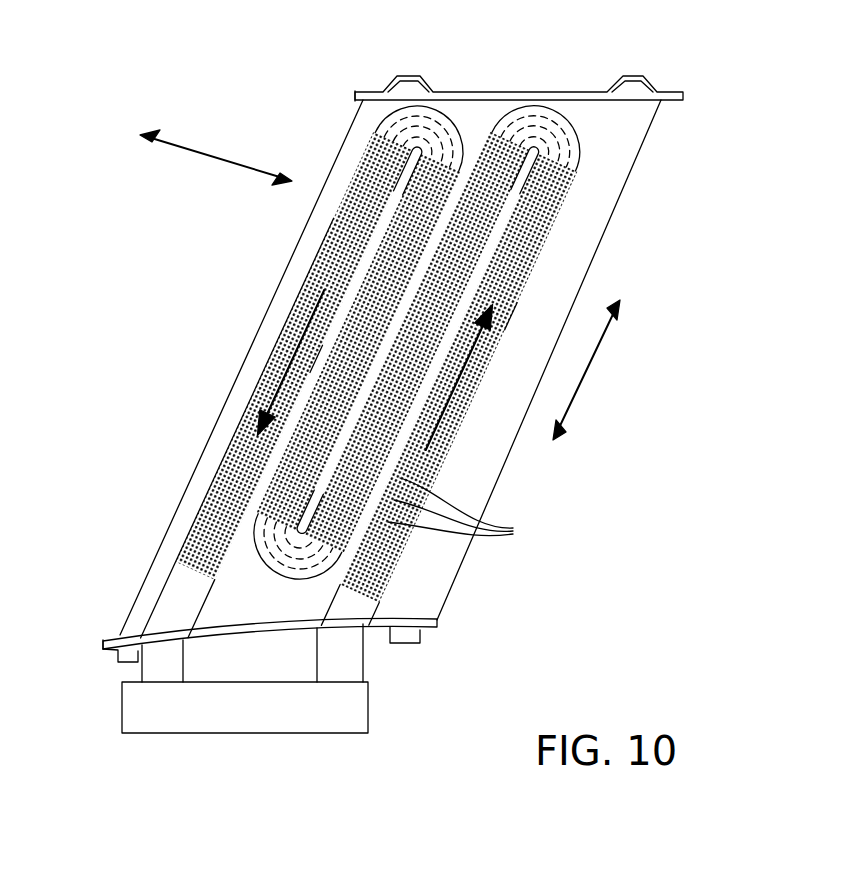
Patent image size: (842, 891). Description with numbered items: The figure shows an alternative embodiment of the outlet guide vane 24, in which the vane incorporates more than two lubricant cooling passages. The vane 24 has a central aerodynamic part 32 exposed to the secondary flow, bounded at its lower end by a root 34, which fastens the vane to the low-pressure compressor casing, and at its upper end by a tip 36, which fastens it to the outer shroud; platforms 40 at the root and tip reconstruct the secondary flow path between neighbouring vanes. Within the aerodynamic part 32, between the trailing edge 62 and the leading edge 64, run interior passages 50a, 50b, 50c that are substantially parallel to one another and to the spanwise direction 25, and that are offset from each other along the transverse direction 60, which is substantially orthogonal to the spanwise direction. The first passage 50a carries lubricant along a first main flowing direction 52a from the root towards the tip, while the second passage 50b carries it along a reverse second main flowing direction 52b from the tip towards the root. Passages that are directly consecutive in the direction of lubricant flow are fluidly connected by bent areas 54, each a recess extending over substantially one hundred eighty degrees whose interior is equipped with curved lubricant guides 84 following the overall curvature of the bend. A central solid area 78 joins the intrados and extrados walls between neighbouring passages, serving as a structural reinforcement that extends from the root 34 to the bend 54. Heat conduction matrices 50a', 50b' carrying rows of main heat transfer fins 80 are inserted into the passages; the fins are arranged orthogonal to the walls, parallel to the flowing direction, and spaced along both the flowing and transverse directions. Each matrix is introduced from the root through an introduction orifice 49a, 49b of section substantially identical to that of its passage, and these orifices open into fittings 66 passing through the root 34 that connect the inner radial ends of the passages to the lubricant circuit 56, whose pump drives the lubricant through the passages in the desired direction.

The outlet guide vane 24 is at (752, 226).
The spanwise direction 25 is at (590, 368).
The aerodynamic part 32 is at (258, 291).
The root 34 is at (415, 636).
The tip 36 is at (632, 88).
The platforms 40 is at (356, 102).
The introduction orifice 49a is at (340, 627).
The introduction orifice 49b is at (178, 640).
The first lubricant cooling interior passage 50a is at (445, 394).
The heat conduction matrix 50a' is at (596, 297).
The second lubricant cooling interior passage 50b is at (257, 393).
The heat conduction matrix 50b' is at (277, 296).
The lubricant cooling interior passage 50c is at (437, 177).
The first main flowing direction 52a is at (465, 424).
The second main flowing direction 52b is at (297, 341).
The bent area 54 is at (428, 110).
The lubricant circuit 56 is at (347, 722).
The transverse direction 60 is at (212, 160).
The trailing edge 62 is at (633, 187).
The leading edge 64 is at (215, 405).
The fittings 66 is at (165, 665).
The central solid area 78 is at (503, 220).
The main heat transfer fins 80 is at (466, 513).
The lubricant guides 84 is at (392, 128).